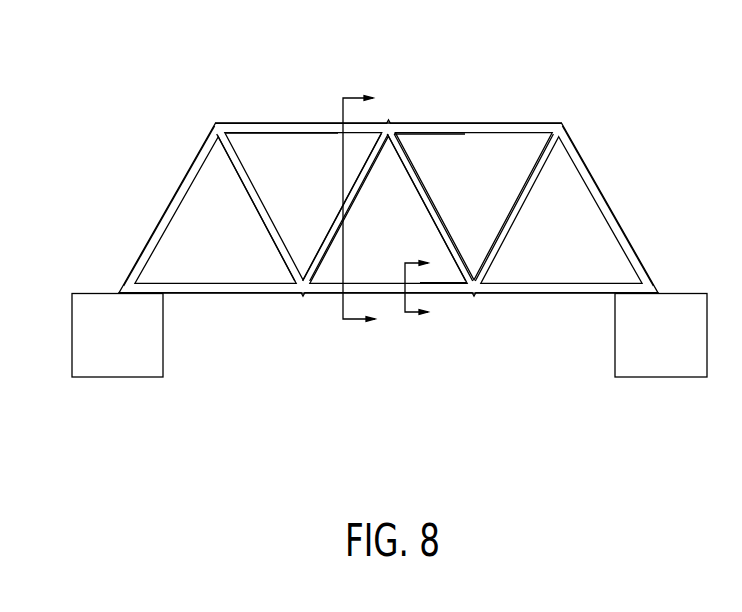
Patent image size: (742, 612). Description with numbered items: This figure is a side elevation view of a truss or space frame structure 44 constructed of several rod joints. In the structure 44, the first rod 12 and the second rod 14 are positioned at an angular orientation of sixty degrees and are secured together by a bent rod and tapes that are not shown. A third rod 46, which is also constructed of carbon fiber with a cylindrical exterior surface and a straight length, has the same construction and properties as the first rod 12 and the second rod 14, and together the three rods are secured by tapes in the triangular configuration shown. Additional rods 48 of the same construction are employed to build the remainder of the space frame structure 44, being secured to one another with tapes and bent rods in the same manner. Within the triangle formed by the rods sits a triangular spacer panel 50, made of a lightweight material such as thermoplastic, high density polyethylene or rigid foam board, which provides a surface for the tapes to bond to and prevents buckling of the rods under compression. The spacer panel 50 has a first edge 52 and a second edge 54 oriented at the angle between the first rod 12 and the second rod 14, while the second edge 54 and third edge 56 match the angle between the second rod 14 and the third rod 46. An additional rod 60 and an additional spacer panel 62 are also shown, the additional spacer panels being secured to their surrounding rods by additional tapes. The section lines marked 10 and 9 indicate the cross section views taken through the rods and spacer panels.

The space frame structure 44 is at (635, 168).
The third rod 46 is at (410, 160).
The additional rods 48 is at (192, 167).
The spacer panel 50 is at (372, 258).
The first edge 52 is at (455, 284).
The second edge 54 is at (374, 138).
The third edge 56 is at (423, 190).
The additional rod 60 is at (313, 123).
The additional spacer panel 62 is at (280, 145).
The first rod 12 is at (317, 295).
The second rod 14 is at (318, 248).
The section line 10- 10 is at (360, 211).
The section line 9- 9 is at (424, 289).